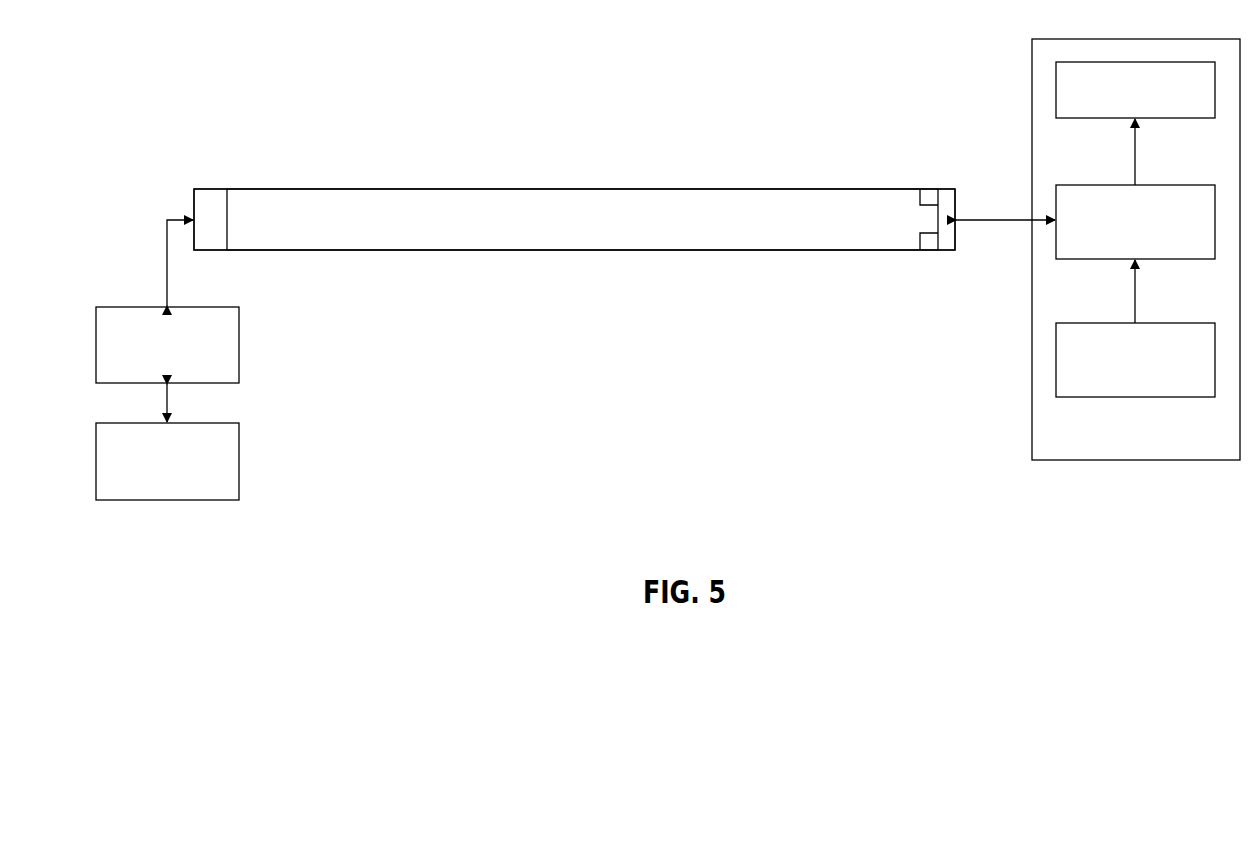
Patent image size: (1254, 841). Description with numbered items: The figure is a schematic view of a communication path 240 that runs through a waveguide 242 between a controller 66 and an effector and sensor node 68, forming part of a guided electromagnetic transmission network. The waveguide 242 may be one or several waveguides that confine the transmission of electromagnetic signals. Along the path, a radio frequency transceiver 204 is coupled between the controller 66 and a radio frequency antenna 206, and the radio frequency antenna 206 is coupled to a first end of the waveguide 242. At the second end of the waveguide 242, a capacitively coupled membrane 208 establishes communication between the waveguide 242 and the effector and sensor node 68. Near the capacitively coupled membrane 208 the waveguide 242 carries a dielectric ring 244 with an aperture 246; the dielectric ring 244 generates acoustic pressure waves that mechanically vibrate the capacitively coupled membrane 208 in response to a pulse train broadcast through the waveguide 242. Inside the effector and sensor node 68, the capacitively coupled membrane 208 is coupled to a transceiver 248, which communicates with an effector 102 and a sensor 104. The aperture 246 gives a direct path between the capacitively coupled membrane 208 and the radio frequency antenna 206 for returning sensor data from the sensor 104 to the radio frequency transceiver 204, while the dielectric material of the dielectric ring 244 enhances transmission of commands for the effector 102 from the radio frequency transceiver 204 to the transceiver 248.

The communication path 240 is at (386, 113).
The waveguide 242 is at (571, 189).
The radio frequency antenna 206 is at (213, 189).
The capacitively coupled membrane 208 is at (945, 251).
The dielectric ring 244 is at (932, 195).
The aperture 246 is at (928, 220).
The radio frequency transceiver 204 is at (190, 358).
The controller 66 is at (183, 477).
The effector and sensor node 68 is at (1149, 440).
The effector 102 is at (1157, 104).
The transceiver 248 is at (1157, 236).
The sensor 104 is at (1157, 376).